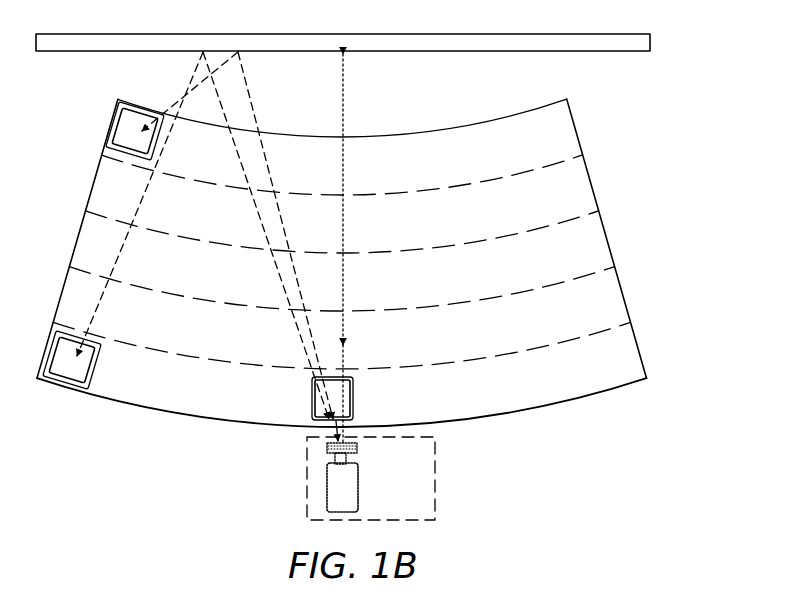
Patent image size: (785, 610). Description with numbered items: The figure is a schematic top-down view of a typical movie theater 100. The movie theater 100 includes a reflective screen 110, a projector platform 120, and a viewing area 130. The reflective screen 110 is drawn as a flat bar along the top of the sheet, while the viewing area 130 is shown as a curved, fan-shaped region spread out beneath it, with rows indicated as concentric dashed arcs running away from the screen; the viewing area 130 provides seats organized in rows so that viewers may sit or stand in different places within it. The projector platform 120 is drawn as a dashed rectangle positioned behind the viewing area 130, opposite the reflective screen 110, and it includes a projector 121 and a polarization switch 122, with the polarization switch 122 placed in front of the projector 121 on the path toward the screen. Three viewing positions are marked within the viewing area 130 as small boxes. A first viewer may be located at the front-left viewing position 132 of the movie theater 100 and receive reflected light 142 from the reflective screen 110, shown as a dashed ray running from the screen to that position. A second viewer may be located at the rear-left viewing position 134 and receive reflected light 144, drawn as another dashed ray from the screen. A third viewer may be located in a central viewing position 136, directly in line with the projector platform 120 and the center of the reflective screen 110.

The movie theater 100 is at (522, 479).
The reflective screen 110 is at (652, 43).
The projector platform 120 is at (303, 497).
The projector 121 is at (358, 488).
The polarization switch 122 is at (360, 448).
The viewing area 130 is at (171, 421).
The front-left viewing position 132 is at (116, 127).
The rear-left viewing position 134 is at (96, 368).
The central viewing position 136 is at (310, 402).
The reflected light 142 is at (256, 108).
The reflected light 144 is at (258, 206).